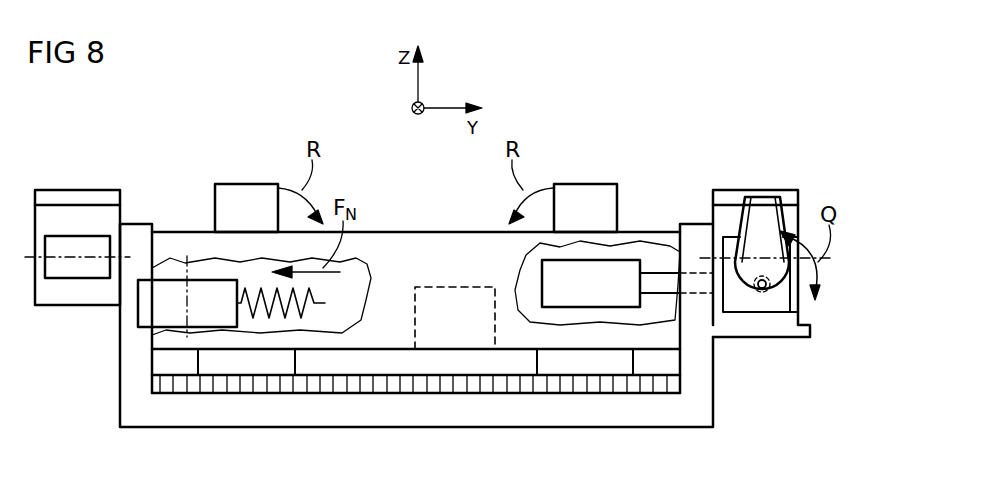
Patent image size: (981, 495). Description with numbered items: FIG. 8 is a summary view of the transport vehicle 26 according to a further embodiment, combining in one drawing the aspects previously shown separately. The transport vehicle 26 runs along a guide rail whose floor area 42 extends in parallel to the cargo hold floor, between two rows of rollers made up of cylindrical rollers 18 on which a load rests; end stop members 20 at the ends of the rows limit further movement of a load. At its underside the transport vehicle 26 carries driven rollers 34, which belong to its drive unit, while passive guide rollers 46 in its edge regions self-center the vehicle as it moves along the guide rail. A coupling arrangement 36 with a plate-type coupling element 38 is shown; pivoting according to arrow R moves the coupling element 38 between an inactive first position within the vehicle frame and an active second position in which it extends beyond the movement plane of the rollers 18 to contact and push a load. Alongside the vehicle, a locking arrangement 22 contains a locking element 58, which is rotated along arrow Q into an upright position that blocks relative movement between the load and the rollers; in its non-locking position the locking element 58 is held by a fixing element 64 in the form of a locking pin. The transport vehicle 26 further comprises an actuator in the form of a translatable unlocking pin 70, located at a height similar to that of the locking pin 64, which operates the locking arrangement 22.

The cylindrical rollers 18 is at (70, 270).
The end stop members 20 is at (428, 242).
The locking arrangement 22 is at (771, 218).
The transport vehicle 26 is at (442, 245).
The driven rollers 34 is at (250, 365).
The coupling arrangement 36 is at (425, 184).
The coupling element 38 is at (248, 185).
The floor area 42 is at (454, 395).
The passive guide rollers 46 is at (150, 319).
The locking element 58 is at (765, 205).
The fixing element 64 is at (698, 287).
The unlocking pin 70 is at (625, 270).